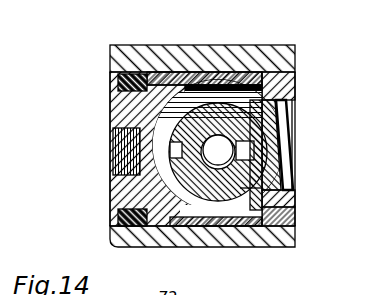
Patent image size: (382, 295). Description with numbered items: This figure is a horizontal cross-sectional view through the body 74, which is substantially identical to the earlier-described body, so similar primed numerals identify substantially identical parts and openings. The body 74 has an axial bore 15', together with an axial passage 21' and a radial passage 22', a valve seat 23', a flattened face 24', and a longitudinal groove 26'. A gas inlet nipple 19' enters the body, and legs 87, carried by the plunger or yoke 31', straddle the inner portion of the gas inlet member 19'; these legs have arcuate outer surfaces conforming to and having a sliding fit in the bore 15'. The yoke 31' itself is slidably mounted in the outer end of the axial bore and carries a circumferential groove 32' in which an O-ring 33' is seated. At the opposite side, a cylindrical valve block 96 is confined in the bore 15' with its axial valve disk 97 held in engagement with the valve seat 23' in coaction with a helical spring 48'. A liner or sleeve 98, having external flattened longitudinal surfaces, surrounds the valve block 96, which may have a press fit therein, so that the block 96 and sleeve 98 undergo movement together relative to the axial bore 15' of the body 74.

The axial bore 15' is at (202, 45).
The legs 87 is at (228, 77).
The liner or sleeve 98 is at (283, 84).
The O-ring 33' is at (107, 82).
The longitudinal groove 26' is at (129, 142).
The radial passage 22' is at (221, 150).
The valve seat 23' is at (305, 145).
The axial valve disk 97 is at (277, 143).
The helical spring 48' is at (313, 149).
The cylindrical valve block 96 is at (296, 204).
The body 74 is at (250, 242).
The gas inlet nipple 19' is at (217, 179).
The axial passage 21' is at (218, 154).
The flattened face 24' is at (221, 202).
The yoke 31' is at (167, 149).
The circumferential groove 32' is at (106, 215).